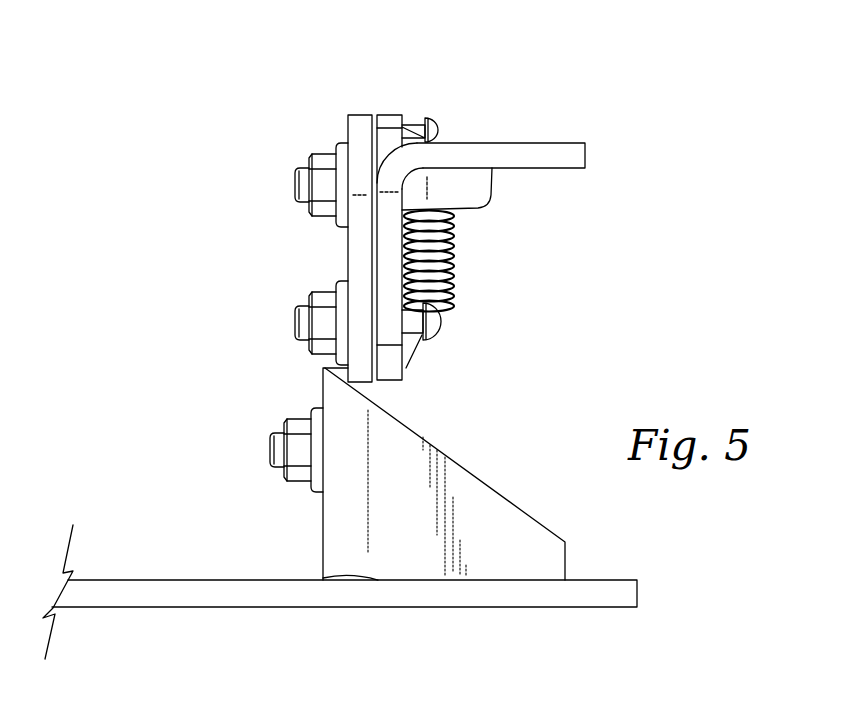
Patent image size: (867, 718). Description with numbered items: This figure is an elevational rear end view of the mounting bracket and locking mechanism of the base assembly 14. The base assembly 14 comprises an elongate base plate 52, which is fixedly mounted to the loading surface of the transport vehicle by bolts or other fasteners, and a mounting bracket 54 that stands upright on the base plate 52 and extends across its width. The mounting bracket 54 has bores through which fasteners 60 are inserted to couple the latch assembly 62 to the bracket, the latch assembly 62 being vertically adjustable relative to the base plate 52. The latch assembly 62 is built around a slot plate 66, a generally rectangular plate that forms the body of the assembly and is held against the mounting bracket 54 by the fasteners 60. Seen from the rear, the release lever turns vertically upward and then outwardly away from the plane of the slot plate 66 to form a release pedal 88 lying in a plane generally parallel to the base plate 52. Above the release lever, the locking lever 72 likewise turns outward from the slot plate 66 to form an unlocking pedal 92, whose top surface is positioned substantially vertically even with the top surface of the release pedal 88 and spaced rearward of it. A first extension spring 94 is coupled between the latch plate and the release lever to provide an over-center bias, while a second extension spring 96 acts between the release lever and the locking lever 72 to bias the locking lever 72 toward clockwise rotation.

The base assembly 14 is at (196, 218).
The base plate 52 is at (638, 594).
The mounting bracket 54 is at (500, 568).
The fastener 60 is at (268, 458).
The latch assembly 62 is at (608, 243).
The slot plate 66 is at (361, 114).
The locking lever 72 is at (484, 197).
The release pedal 88 is at (581, 142).
The unlocking pedal 92 is at (513, 171).
The first extension spring 94 is at (453, 233).
The second extension spring 96 is at (438, 305).